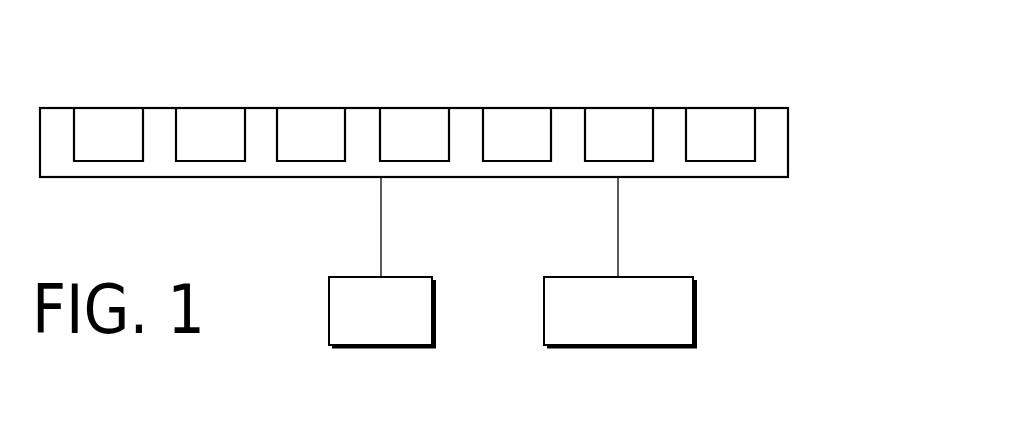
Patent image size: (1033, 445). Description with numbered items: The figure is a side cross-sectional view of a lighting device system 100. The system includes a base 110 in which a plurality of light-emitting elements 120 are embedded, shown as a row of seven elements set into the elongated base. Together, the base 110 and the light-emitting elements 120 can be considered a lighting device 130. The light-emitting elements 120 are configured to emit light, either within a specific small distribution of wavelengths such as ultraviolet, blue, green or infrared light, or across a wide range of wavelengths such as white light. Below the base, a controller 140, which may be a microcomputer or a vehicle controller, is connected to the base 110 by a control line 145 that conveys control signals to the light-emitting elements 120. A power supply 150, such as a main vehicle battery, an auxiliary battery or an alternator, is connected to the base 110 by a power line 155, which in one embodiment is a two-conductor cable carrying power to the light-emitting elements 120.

The lighting device system 100 is at (80, 74).
The base 110 is at (262, 178).
The light-emitting elements 120 is at (311, 107).
The lighting device 130 is at (815, 140).
The controller 140 is at (696, 312).
The control line 145 is at (619, 225).
The power supply 150 is at (329, 313).
The power line 155 is at (382, 225).